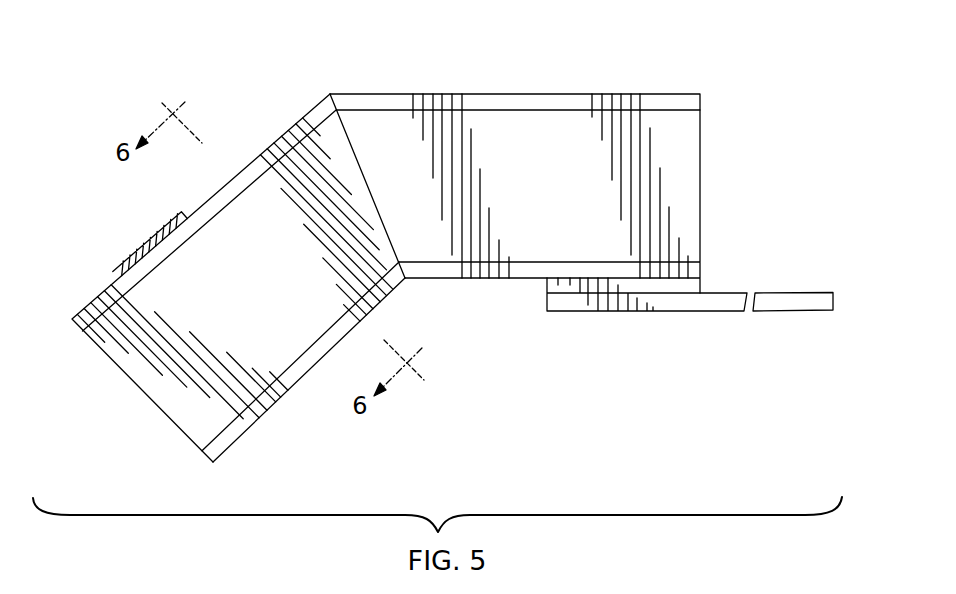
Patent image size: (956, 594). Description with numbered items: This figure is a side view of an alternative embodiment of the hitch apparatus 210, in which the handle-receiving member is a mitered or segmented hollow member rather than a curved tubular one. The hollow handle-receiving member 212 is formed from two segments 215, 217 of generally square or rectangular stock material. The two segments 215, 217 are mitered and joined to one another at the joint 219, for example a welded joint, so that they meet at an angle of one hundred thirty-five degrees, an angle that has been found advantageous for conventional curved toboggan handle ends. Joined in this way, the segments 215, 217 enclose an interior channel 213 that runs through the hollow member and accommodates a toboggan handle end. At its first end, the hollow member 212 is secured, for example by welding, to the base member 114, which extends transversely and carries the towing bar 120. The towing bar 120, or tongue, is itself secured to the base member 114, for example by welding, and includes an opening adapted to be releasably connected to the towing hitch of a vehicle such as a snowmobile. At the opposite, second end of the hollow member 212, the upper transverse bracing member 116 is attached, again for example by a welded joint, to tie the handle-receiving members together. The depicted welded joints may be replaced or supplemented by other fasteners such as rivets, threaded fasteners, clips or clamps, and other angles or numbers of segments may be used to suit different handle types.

The hitch apparatus 210 is at (657, 75).
The hollow handle-receiving member 212 is at (438, 84).
The segment 217 is at (573, 103).
The joint 219 is at (330, 92).
The interior channel 213 is at (153, 377).
The segment 215 is at (245, 434).
The upper transverse bracing member 116 is at (130, 262).
The base member 114 is at (702, 283).
The towing bar 120 is at (790, 313).